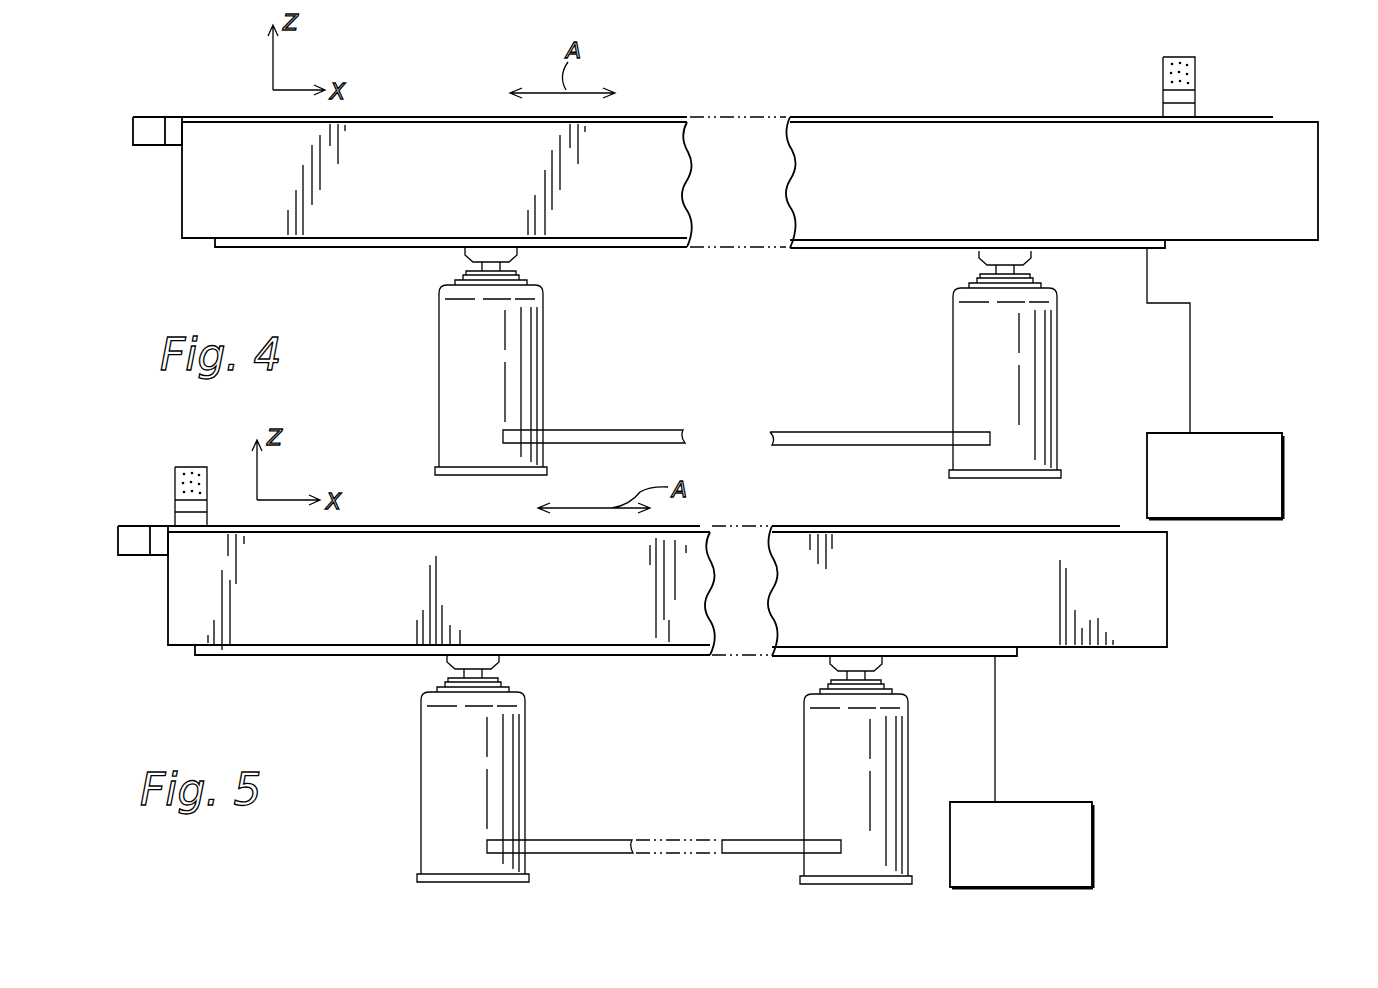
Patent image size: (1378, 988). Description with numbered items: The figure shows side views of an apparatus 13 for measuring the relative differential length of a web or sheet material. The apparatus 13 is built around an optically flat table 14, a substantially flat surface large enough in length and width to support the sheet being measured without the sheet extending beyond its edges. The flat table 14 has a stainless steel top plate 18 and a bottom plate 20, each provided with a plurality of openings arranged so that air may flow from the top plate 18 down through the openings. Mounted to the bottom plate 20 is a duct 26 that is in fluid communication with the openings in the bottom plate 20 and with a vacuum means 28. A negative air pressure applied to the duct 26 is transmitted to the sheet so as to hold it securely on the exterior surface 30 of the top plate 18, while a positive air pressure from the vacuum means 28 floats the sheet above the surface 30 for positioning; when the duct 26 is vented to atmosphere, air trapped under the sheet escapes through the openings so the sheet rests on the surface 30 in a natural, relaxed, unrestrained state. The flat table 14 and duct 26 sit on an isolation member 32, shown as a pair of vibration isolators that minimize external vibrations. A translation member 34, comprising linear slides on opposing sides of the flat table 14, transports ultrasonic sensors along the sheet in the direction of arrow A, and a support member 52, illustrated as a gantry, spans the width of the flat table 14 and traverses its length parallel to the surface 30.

In FIG. 4, the apparatus 13 is at (850, 104).
In FIG. 5, the apparatus 13 is at (1188, 712).
In FIG. 4, the optically flat table 14 is at (257, 200).
In FIG. 5, the optically flat table 14 is at (315, 623).
In FIG. 4, the top plate 18 is at (388, 117).
In FIG. 5, the top plate 18 is at (372, 526).
In FIG. 4, the bottom plate 20 is at (190, 245).
In FIG. 5, the bottom plate 20 is at (181, 650).
In FIG. 4, the duct 26 is at (1095, 250).
In FIG. 5, the duct 26 is at (956, 660).
In FIG. 4, the vacuum means 28 is at (1282, 503).
In FIG. 5, the vacuum means 28 is at (1092, 866).
In FIG. 4, the exterior surface 30 is at (992, 117).
In FIG. 5, the exterior surface 30 is at (797, 527).
In FIG. 4, the isolation member 32 is at (513, 359).
In FIG. 5, the isolation member 32 is at (472, 787).
In FIG. 4, the translation member 34 is at (160, 132).
In FIG. 5, the translation member 34 is at (133, 535).
In FIG. 4, the support member 52 is at (1197, 75).
In FIG. 5, the support member 52 is at (197, 467).